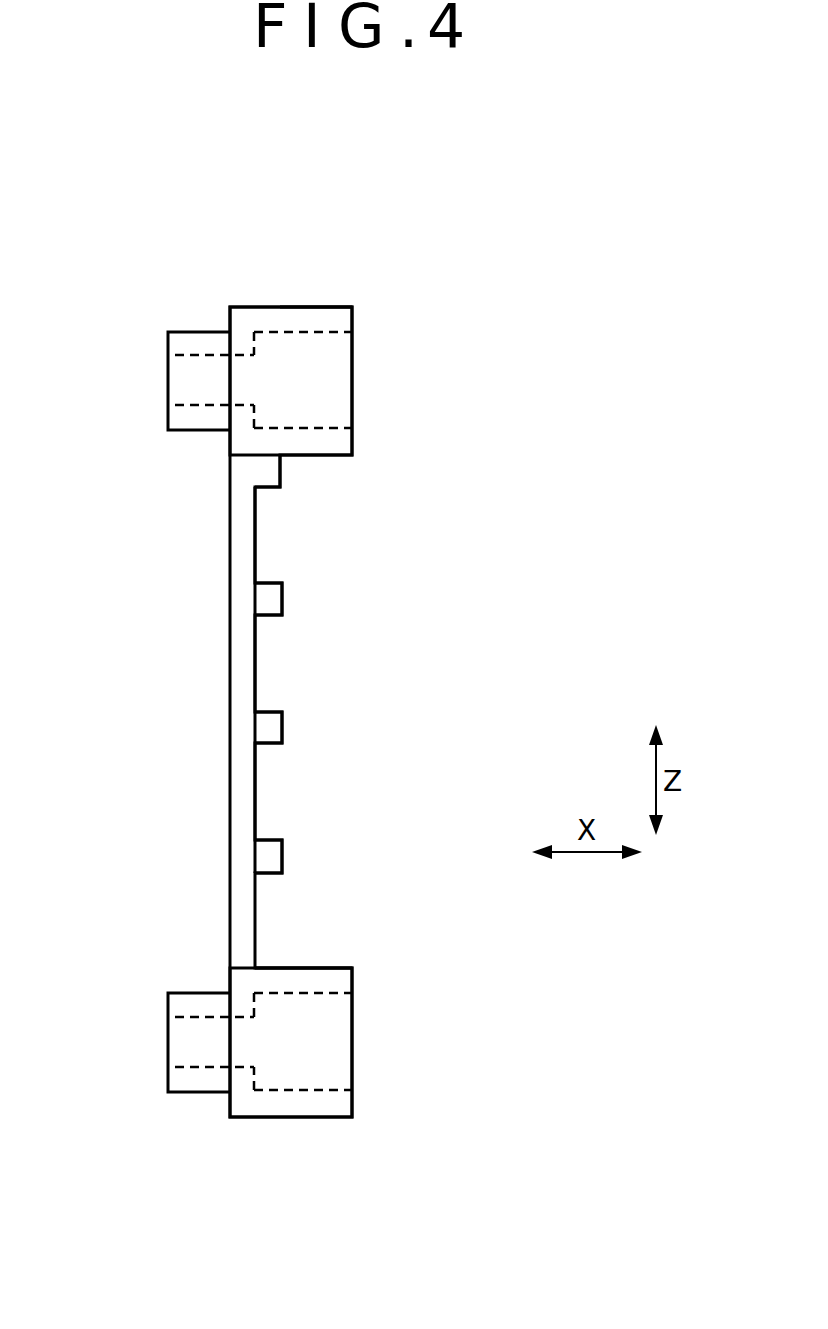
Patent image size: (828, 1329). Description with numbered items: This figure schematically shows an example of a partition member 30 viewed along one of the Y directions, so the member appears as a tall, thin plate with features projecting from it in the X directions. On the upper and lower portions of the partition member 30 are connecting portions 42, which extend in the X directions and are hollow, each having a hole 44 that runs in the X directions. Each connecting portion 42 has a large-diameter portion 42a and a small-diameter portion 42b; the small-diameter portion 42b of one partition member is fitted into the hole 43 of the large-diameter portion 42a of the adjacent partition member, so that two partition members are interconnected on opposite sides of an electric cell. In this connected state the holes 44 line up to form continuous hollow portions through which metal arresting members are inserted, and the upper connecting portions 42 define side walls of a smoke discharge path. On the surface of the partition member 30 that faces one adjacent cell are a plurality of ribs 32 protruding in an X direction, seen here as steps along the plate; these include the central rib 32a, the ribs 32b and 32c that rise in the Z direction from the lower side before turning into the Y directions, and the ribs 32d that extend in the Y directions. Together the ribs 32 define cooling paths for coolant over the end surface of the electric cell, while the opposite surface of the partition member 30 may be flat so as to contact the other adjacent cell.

The partition member 30 is at (216, 207).
The ribs 32 is at (387, 473).
The central rib 32a is at (280, 472).
The rib 32b is at (282, 598).
The rib 32c is at (282, 855).
The rib 32d is at (282, 727).
The connecting portion 42 is at (290, 296).
The large-diameter portion 42a is at (318, 306).
The small-diameter portion 42b is at (200, 332).
The hole 43 is at (352, 342).
The hole 44 is at (182, 366).